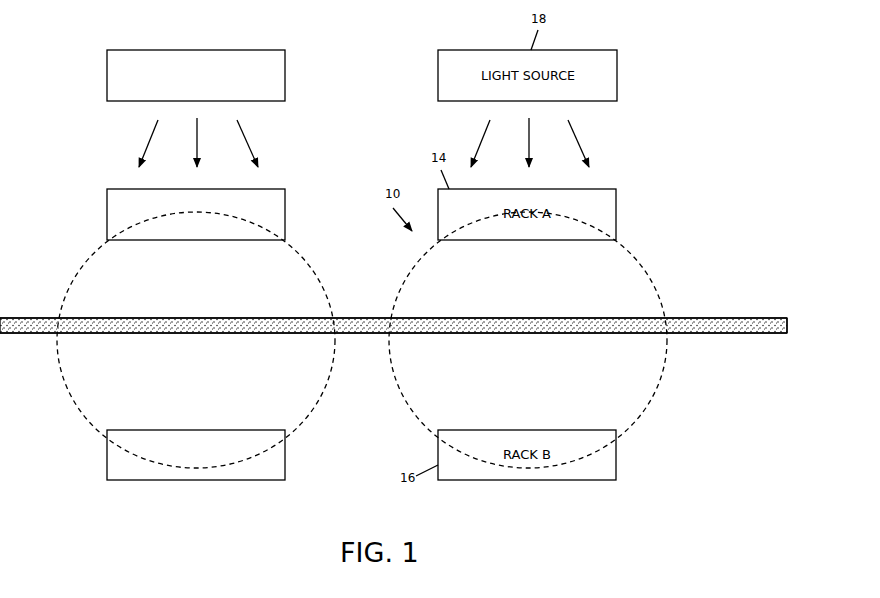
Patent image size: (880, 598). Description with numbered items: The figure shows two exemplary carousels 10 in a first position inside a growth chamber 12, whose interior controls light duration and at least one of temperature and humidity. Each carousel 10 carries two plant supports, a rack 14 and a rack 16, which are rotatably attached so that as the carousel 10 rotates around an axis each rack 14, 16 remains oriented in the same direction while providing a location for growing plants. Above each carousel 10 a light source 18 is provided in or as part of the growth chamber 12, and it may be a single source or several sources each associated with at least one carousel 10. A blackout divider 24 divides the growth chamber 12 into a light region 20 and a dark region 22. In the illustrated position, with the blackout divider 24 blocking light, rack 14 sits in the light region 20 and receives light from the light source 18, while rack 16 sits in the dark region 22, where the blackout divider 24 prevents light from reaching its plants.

The carousel 10 is at (81, 231).
The growth chamber 12 is at (698, 84).
The rack 14 is at (118, 189).
The rack 16 is at (107, 465).
The light source 18 is at (200, 50).
The light region 20 is at (693, 270).
The dark region 22 is at (702, 357).
The blackout divider 24 is at (771, 318).